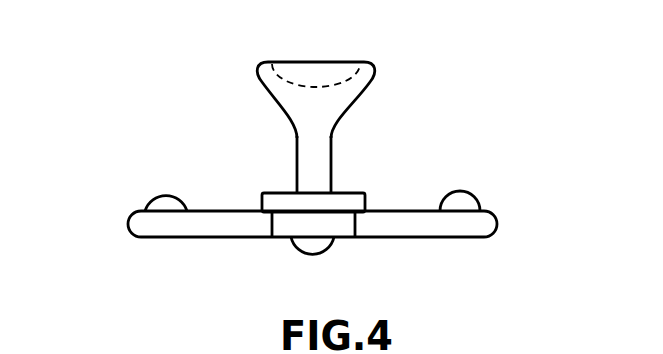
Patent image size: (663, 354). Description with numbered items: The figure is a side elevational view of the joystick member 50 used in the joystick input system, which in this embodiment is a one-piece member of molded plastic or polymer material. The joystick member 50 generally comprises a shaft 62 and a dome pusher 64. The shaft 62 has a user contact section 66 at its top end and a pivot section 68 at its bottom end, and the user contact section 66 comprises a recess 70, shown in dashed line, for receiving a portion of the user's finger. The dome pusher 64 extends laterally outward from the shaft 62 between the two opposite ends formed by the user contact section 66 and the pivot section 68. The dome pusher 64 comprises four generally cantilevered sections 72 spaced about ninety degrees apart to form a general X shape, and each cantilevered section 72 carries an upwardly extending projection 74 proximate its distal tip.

The joystick member 50 is at (152, 100).
The shaft 62 is at (332, 148).
The dome pusher 64 is at (342, 232).
The user contact section 66 is at (374, 76).
The pivot section 68 is at (322, 258).
The recess 70 is at (323, 73).
The cantilevered section 72 is at (188, 239).
The upwardly extending projection 74 is at (158, 190).